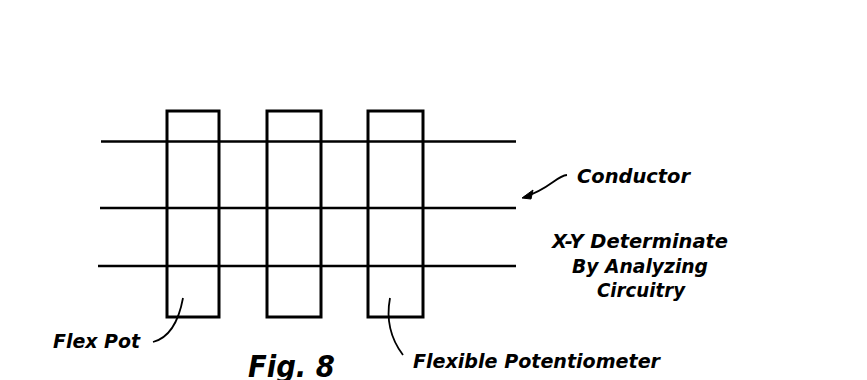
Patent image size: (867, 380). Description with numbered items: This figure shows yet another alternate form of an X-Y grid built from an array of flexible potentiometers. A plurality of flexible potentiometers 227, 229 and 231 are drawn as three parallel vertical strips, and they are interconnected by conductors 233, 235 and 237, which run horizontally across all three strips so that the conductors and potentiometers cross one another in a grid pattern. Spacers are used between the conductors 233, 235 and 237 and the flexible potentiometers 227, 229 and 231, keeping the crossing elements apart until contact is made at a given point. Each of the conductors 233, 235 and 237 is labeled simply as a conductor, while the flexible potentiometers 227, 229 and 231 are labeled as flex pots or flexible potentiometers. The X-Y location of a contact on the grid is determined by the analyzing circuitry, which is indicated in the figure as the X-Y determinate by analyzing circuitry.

The flexible potentiometer 227 is at (393, 110).
The flexible potentiometer 229 is at (188, 110).
The flexible potentiometer 231 is at (278, 110).
The conductor 233 is at (449, 141).
The conductor 235 is at (442, 208).
The conductor 237 is at (444, 266).